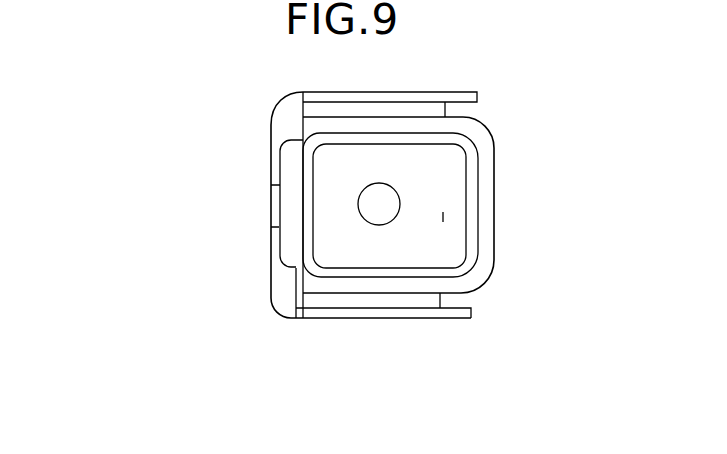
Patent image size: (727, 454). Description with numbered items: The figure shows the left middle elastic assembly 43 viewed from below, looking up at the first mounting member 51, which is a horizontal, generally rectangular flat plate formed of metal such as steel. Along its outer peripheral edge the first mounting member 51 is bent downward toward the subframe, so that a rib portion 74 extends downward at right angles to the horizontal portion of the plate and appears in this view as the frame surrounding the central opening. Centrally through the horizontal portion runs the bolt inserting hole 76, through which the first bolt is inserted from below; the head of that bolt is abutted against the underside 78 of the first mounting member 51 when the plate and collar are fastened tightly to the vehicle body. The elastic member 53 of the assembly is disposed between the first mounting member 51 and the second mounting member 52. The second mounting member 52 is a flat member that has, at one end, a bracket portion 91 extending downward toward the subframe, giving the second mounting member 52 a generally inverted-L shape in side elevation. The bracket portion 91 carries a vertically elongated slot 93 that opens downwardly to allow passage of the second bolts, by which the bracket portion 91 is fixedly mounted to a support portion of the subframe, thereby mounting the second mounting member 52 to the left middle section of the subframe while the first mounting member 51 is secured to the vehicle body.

The left middle elastic assembly 43 is at (173, 145).
The first mounting member 51 is at (480, 140).
The second mounting member 52 is at (270, 137).
The elastic member 53 is at (494, 185).
The rib portion 74 is at (468, 164).
The bolt inserting hole 76 is at (398, 205).
The underside 78 is at (444, 217).
The bracket portion 91 is at (271, 270).
The vertically elongated slot 93 is at (271, 212).